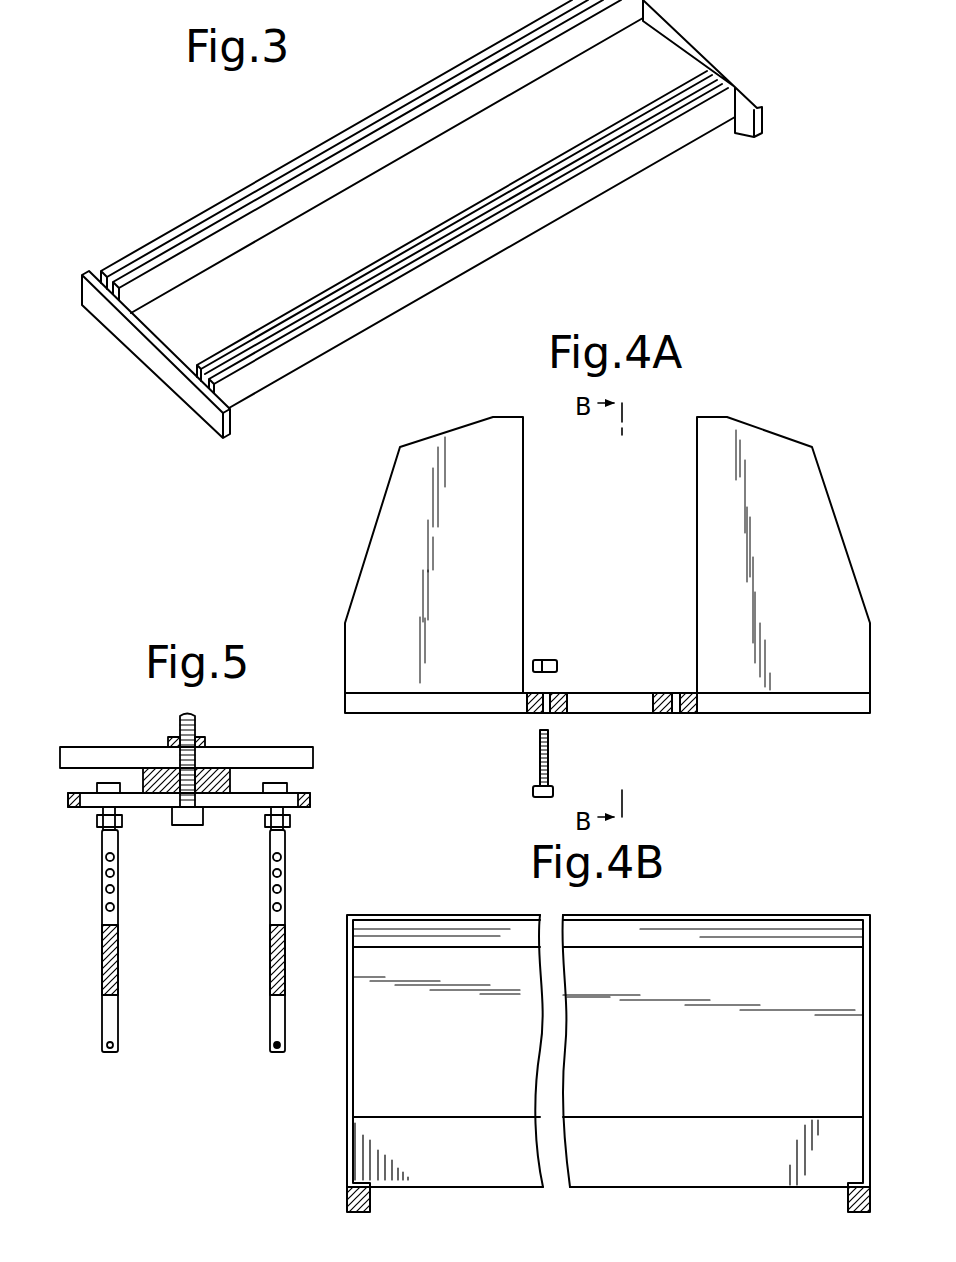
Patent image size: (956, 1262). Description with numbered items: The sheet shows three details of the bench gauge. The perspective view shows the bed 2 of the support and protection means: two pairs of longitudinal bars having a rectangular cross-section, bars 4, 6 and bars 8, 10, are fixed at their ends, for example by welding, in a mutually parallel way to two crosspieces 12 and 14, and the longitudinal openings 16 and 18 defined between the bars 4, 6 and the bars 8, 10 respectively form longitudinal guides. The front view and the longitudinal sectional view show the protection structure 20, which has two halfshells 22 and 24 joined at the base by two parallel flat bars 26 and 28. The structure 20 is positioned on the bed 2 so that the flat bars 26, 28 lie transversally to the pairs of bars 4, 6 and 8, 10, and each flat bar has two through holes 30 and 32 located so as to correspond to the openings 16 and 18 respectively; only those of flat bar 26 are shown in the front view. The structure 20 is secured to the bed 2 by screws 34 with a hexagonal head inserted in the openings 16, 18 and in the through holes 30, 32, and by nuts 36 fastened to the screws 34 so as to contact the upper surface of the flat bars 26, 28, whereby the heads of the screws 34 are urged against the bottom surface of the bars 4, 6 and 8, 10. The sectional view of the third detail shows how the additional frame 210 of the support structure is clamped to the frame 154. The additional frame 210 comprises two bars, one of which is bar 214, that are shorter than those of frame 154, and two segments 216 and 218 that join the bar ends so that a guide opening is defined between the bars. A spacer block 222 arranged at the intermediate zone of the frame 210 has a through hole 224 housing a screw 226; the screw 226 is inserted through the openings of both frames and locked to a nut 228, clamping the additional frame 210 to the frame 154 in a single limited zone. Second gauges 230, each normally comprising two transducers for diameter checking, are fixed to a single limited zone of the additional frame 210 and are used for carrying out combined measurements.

In FIG. 3, the bed 2 is at (283, 152).
In FIG. 3, the longitudinal bar 4 is at (508, 43).
In FIG. 3, the longitudinal bar 6 is at (482, 93).
In FIG. 3, the longitudinal bar 8 is at (588, 155).
In FIG. 3, the longitudinal bar 10 is at (665, 145).
In FIG. 3, the crosspiece 12 is at (165, 373).
In FIG. 3, the crosspiece 14 is at (685, 28).
In FIG. 3, the longitudinal opening 16 is at (432, 100).
In FIG. 3, the longitudinal opening 18 is at (477, 218).
In FIG. 4A, the protection structure 20 is at (377, 463).
In FIG. 4B, the protection structure 20 is at (383, 897).
In FIG. 4A, the halfshell 22 is at (378, 578).
In FIG. 4A, the halfshell 24 is at (762, 441).
In FIG. 4B, the halfshell 24 is at (733, 958).
In FIG. 4A, the flat bar 26 is at (390, 703).
In FIG. 4B, the flat bar 26 is at (372, 1195).
In FIG. 4B, the flat bar 28 is at (848, 1200).
In FIG. 4A, the through hole 30 is at (548, 690).
In FIG. 4A, the through hole 32 is at (676, 690).
In FIG. 4A, the screw 34 is at (538, 782).
In FIG. 4A, the nut 36 is at (548, 655).
In FIG. 5, the frame 154 is at (300, 750).
In FIG. 5, the additional frame 210 is at (318, 782).
In FIG. 5, the bar 214 is at (150, 803).
In FIG. 5, the segment 216 is at (72, 808).
In FIG. 5, the segment 218 is at (307, 800).
In FIG. 5, the spacer block 222 is at (150, 777).
In FIG. 5, the through hole 224 is at (202, 768).
In FIG. 5, the screw 226 is at (203, 820).
In FIG. 5, the nut 228 is at (170, 738).
In FIG. 5, the second gauge 230 is at (270, 955).